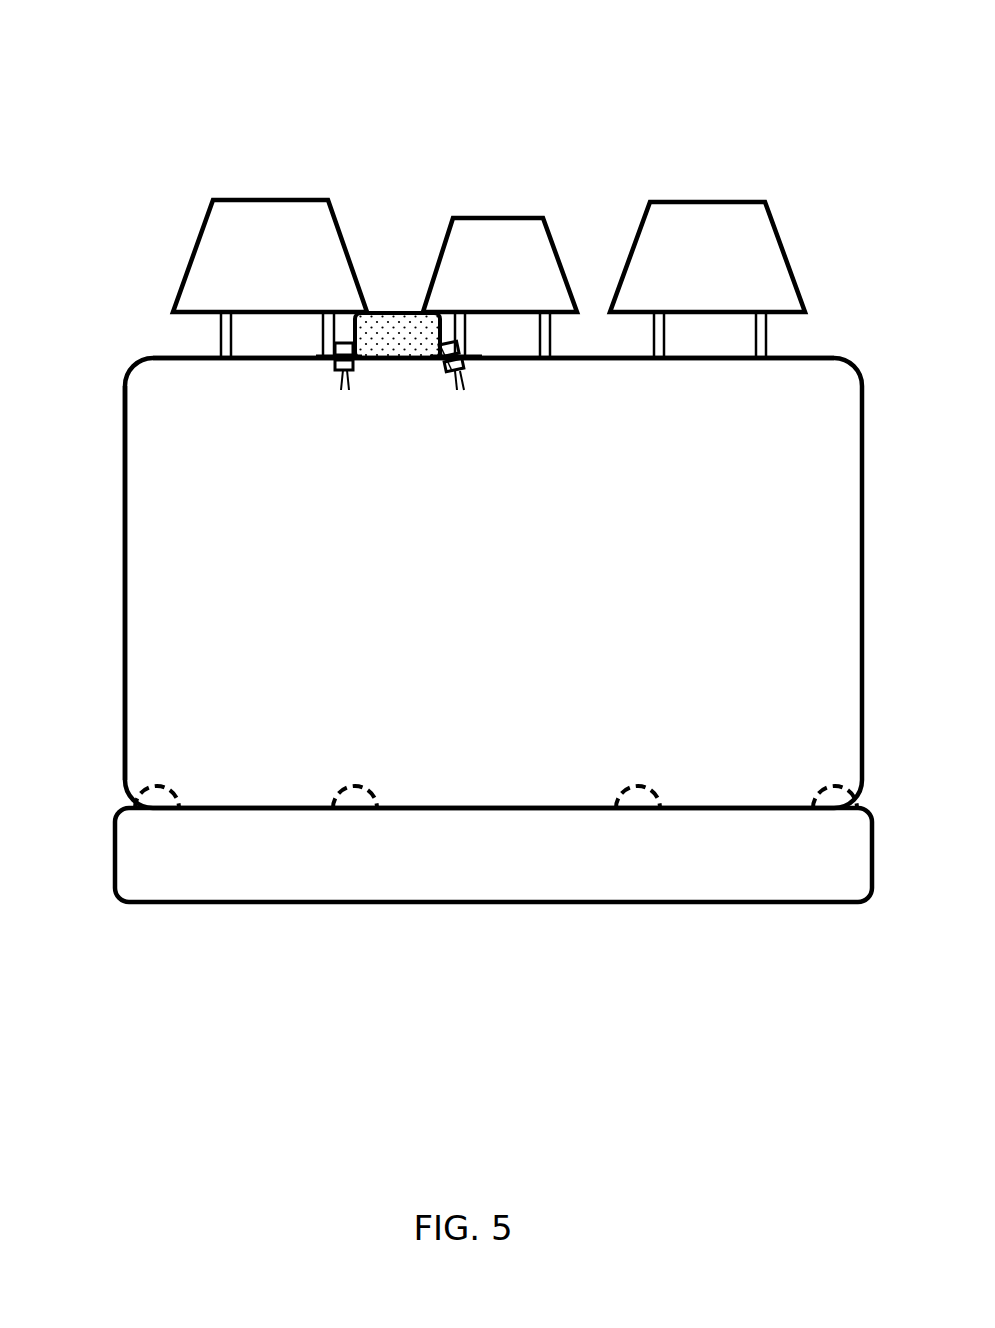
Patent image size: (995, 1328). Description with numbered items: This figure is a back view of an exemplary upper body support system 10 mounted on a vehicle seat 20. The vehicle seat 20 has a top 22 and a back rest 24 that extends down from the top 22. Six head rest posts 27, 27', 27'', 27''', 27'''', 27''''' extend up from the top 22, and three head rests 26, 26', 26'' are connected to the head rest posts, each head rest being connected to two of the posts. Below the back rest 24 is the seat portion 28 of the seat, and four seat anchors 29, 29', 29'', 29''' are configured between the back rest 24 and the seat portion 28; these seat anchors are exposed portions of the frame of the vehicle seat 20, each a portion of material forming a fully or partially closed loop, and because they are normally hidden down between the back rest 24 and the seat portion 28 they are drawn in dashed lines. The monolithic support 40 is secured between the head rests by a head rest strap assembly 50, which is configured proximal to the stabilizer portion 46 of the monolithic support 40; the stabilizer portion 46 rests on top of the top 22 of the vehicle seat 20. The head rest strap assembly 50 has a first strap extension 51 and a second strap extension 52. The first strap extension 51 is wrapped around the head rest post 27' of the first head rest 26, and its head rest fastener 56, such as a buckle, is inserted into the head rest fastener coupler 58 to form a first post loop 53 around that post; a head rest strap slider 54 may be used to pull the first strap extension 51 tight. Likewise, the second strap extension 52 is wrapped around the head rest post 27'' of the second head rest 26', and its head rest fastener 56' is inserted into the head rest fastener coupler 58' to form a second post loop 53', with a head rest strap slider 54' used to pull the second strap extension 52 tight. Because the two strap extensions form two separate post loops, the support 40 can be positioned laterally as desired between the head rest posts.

The upper body support system 10 is at (196, 127).
The vehicle seat 20 is at (130, 458).
The top 22 is at (150, 357).
The back rest 24 is at (127, 503).
The head rest 26 is at (241, 228).
The head rest 26' is at (510, 239).
The head rest 26'' is at (711, 225).
The head rest post 27 is at (133, 309).
The head rest post 27' is at (282, 304).
The head rest post 27'' is at (495, 308).
The head rest post 27''' is at (616, 313).
The head rest post 27'''' is at (723, 298).
The head rest post 27''''' is at (832, 335).
The seat portion 28 is at (455, 830).
The seat anchor 29 is at (181, 764).
The seat anchor 29' is at (377, 749).
The seat anchor 29'' is at (595, 768).
The seat anchor 29''' is at (787, 771).
The monolithic support 40 is at (400, 312).
The stabilizer portion 46 is at (415, 312).
The head rest strap assembly 50 is at (440, 368).
The first strap extension 51 is at (313, 362).
The second strap extension 52 is at (470, 360).
The first post loop 53 is at (293, 408).
The second post loop 53' is at (428, 410).
The head rest strap slider 54 is at (330, 295).
The head rest strap slider 54' is at (459, 304).
The head rest fastener 56 is at (306, 431).
The head rest fastener 56' is at (490, 400).
The head rest fastener coupler 58 is at (368, 433).
The head rest fastener coupler 58' is at (478, 424).